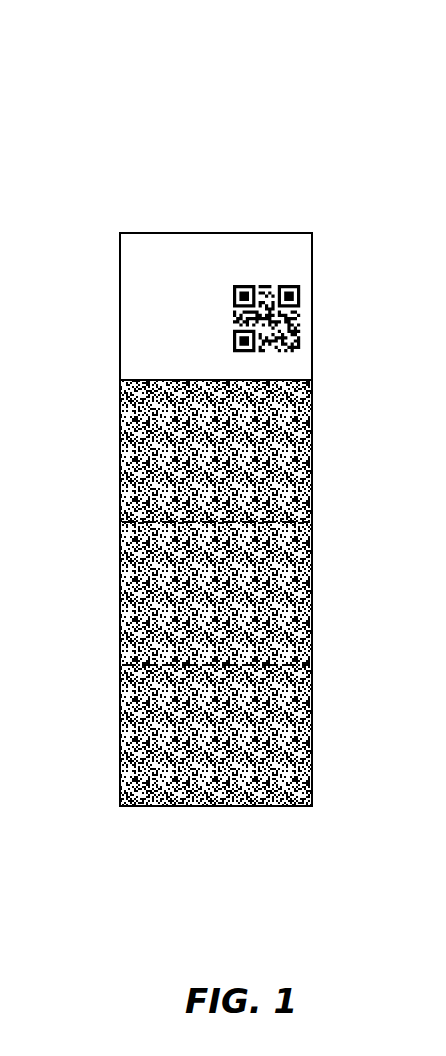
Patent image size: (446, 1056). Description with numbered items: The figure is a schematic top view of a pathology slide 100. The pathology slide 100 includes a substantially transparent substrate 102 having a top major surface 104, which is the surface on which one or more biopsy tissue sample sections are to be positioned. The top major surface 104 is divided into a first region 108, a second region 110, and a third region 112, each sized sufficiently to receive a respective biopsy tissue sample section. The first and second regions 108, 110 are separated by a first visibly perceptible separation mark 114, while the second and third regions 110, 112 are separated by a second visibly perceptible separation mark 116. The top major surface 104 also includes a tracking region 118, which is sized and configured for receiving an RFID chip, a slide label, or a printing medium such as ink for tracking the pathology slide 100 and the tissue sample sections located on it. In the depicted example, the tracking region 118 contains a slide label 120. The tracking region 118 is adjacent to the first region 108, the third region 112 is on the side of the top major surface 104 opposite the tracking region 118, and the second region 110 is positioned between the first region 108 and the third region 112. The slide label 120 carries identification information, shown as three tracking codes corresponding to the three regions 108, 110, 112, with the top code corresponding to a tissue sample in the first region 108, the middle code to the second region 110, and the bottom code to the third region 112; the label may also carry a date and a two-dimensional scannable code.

The pathology slide 100 is at (208, 466).
The substantially transparent substrate 102 is at (205, 642).
The top major surface 104 is at (205, 593).
The first region 108 is at (145, 458).
The second region 110 is at (145, 585).
The third region 112 is at (145, 717).
The first visibly perceptible separation mark 114 is at (262, 522).
The second visibly perceptible separation mark 116 is at (262, 665).
The tracking region 118 is at (208, 306).
The slide label 120 is at (276, 283).